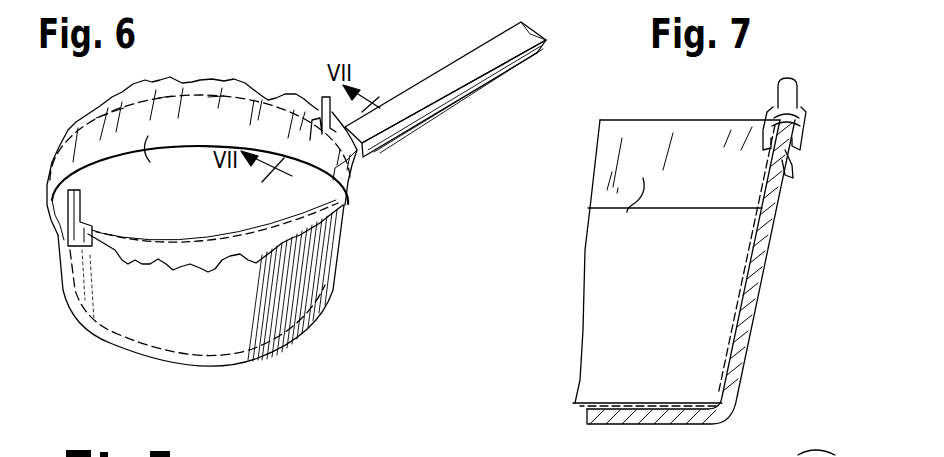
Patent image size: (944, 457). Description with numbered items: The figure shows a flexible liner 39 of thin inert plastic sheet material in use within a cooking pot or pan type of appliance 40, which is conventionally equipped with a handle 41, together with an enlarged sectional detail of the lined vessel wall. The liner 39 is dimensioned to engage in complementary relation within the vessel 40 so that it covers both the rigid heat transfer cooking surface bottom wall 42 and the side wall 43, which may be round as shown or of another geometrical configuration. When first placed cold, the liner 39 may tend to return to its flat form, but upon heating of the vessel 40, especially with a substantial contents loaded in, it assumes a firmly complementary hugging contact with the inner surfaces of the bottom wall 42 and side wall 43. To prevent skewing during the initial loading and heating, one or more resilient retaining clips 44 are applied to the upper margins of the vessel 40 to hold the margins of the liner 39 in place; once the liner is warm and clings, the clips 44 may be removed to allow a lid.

In FIG. 6, the flexible liner 39 is at (238, 80).
In FIG. 7, the flexible liner 39 is at (760, 185).
In FIG. 6, the cooking pot or pan type of appliance 40 is at (337, 283).
In FIG. 7, the cooking pot or pan type of appliance 40 is at (738, 393).
In FIG. 6, the handle 41 is at (493, 80).
In FIG. 7, the bottom wall 42 is at (634, 418).
In FIG. 7, the side wall 43 is at (766, 260).
In FIG. 6, the resilient retaining clips 44 is at (70, 238).
In FIG. 7, the resilient retaining clips 44 is at (800, 120).